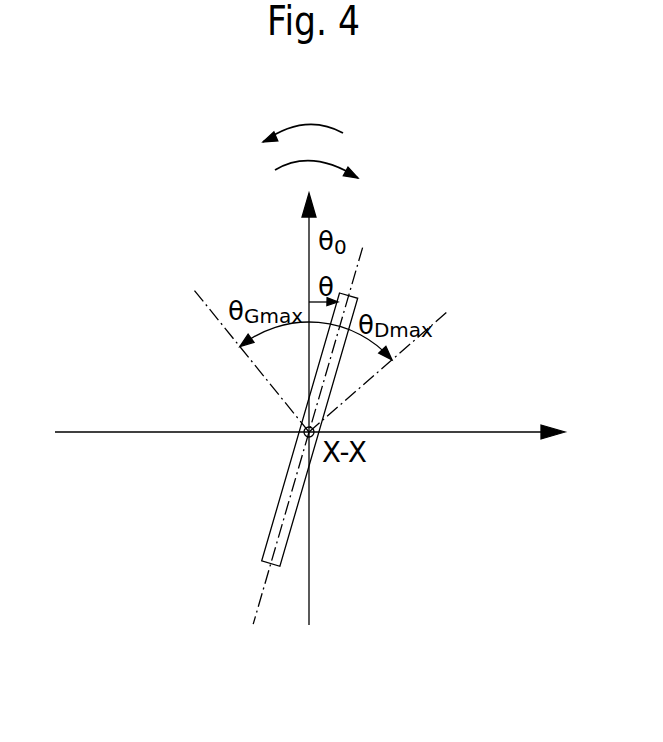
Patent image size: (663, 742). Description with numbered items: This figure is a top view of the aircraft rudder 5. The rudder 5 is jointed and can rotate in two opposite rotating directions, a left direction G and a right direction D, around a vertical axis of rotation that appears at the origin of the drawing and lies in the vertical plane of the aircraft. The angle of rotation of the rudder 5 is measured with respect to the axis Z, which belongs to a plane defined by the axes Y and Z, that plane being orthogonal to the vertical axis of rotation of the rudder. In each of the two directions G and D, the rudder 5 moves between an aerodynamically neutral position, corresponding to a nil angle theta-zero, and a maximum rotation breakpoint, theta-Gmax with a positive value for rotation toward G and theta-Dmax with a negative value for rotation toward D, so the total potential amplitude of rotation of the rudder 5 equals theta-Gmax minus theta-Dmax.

The rudder 5 is at (357, 296).
The rotating direction (left) G is at (303, 115).
The rotating direction (right) D is at (316, 155).
The axis Z- Z is at (299, 411).
The axis Y- Y is at (311, 448).